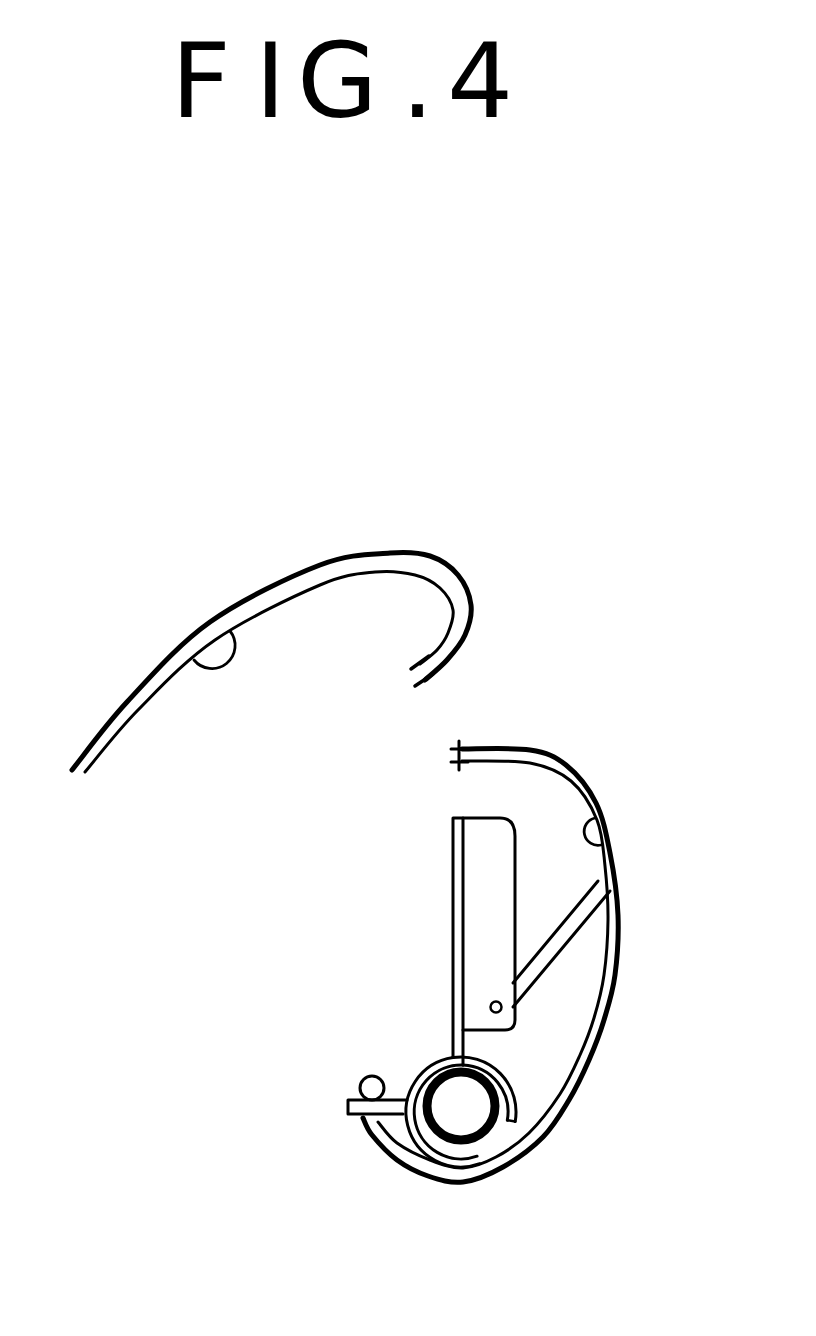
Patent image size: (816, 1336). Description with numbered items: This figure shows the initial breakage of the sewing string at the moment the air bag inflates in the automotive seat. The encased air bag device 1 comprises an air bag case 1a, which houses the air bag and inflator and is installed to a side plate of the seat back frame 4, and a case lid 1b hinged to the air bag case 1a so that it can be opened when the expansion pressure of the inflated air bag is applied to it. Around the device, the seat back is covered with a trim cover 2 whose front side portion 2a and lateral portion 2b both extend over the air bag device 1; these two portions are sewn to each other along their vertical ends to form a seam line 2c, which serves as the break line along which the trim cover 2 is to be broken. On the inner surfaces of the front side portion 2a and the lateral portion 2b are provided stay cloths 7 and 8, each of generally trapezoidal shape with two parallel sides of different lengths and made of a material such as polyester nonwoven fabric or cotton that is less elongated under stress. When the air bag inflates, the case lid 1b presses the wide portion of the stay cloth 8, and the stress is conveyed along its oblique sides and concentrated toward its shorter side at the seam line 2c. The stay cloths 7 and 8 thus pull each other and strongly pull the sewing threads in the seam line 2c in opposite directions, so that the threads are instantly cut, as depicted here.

The air bag device 1 is at (456, 872).
The air bag case 1a is at (482, 928).
The case lid 1b is at (568, 940).
The trim cover 2 is at (128, 702).
The front side portion 2a is at (365, 551).
The lateral portion 2b is at (557, 760).
The seam line 2c is at (447, 692).
The seat back frame 4 is at (440, 1139).
The stay cloth 7 is at (212, 628).
The stay cloth 8 is at (606, 842).